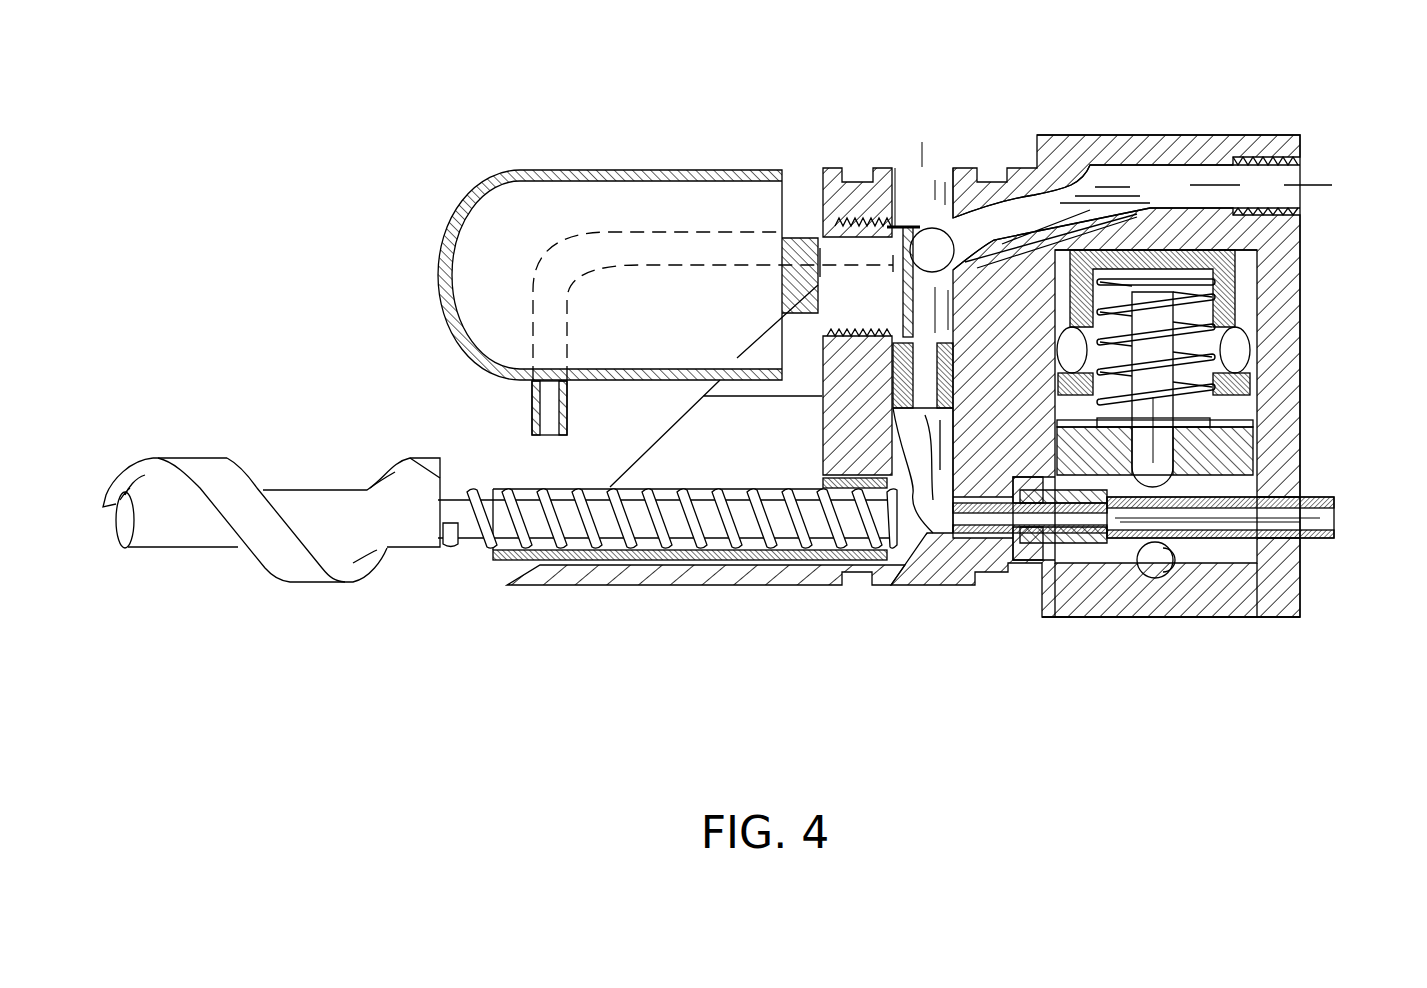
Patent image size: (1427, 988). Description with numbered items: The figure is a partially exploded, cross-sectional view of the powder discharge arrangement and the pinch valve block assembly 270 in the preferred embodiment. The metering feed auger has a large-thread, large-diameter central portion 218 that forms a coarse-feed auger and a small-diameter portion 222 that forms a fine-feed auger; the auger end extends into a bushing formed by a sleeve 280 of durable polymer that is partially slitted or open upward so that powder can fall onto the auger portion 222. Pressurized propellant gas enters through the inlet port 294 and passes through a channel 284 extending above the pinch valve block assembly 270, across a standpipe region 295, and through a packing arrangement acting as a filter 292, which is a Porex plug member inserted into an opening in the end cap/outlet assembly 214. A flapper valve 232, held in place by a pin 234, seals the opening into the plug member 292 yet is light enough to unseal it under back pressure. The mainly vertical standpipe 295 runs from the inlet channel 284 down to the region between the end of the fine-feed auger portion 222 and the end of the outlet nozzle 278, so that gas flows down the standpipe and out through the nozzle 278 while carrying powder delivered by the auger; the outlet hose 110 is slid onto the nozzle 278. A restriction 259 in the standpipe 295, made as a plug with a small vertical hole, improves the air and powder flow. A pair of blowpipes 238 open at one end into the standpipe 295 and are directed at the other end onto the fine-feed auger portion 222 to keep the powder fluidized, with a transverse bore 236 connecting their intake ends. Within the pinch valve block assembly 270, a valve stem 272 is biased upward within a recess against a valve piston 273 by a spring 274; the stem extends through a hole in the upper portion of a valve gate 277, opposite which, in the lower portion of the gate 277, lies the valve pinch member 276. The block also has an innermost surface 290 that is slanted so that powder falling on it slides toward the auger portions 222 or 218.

The outlet hose 110 is at (1321, 542).
The end cap/outlet assembly 214 is at (1290, 325).
The large-diameter central auger portion 218 is at (207, 475).
The small-diameter auger portion 222 is at (457, 557).
The flapper valve 232 is at (905, 225).
The pin 234 is at (922, 228).
The transverse bore 236 is at (1078, 190).
The blowpipes 238 is at (532, 420).
The restriction 259 is at (932, 545).
The pinch valve block assembly 270 is at (1177, 632).
The valve stem 272 is at (1160, 453).
The valve piston 273 is at (1250, 263).
The spring 274 is at (1252, 389).
The valve pinch member 276 is at (1142, 575).
The valve gate 277 is at (1217, 618).
The outlet nozzle 278 is at (1037, 562).
The sleeve 280 is at (492, 567).
The inlet channel 284 is at (1140, 185).
The innermost surface 290 is at (658, 442).
The filter 292 is at (623, 170).
The inlet port 294 is at (1284, 178).
The standpipe 295 is at (930, 200).